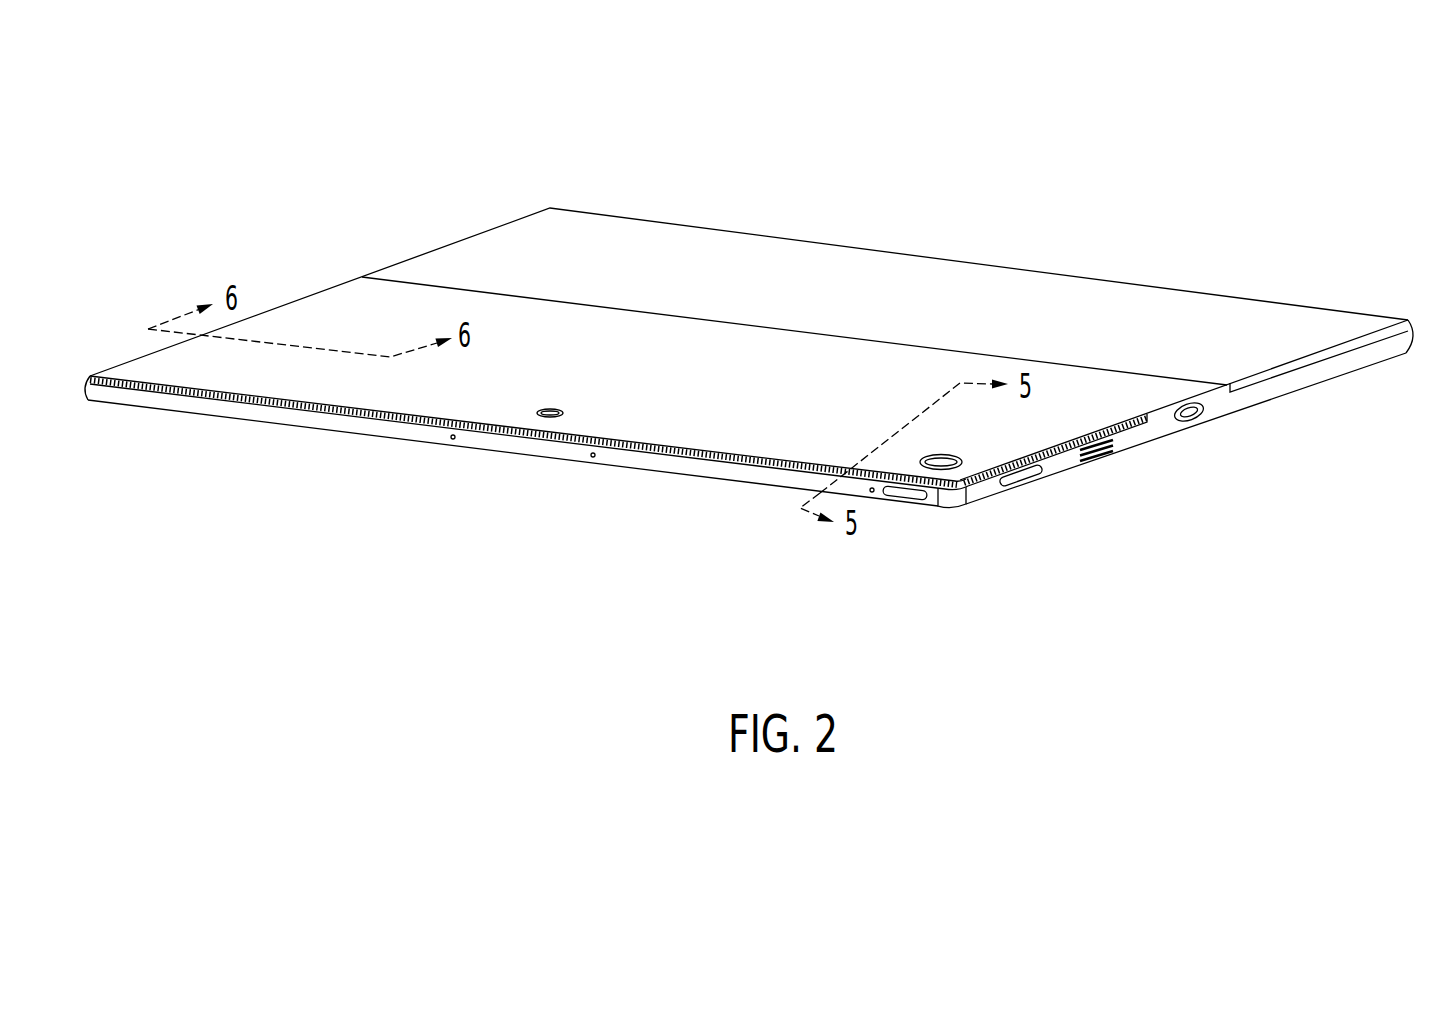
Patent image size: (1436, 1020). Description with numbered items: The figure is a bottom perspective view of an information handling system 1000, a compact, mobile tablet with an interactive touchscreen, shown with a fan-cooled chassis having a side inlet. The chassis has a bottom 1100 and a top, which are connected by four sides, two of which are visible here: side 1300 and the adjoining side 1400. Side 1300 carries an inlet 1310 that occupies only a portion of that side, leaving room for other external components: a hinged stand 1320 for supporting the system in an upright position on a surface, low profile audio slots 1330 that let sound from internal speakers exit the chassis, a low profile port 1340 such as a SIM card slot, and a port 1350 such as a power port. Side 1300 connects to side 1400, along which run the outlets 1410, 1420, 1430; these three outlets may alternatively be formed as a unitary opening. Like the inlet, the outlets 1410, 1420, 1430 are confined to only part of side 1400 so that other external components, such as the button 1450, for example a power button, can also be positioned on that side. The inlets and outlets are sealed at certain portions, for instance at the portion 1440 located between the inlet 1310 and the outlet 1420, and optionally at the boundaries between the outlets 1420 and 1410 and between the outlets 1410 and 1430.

The information handling system 1000 is at (868, 201).
The bottom 1100 is at (366, 289).
The side 1300 is at (1057, 467).
The inlet 1310 is at (1130, 427).
The hinged stand 1320 is at (1302, 362).
The low profile audio slots 1330 is at (1093, 458).
The low profile port 1340 is at (1001, 480).
The port 1350 is at (1194, 414).
The side 1400 is at (342, 431).
The outlet 1410 is at (528, 434).
The outlet 1420 is at (748, 464).
The outlet 1430 is at (227, 391).
The portion 1440 is at (143, 391).
The button 1450 is at (897, 497).